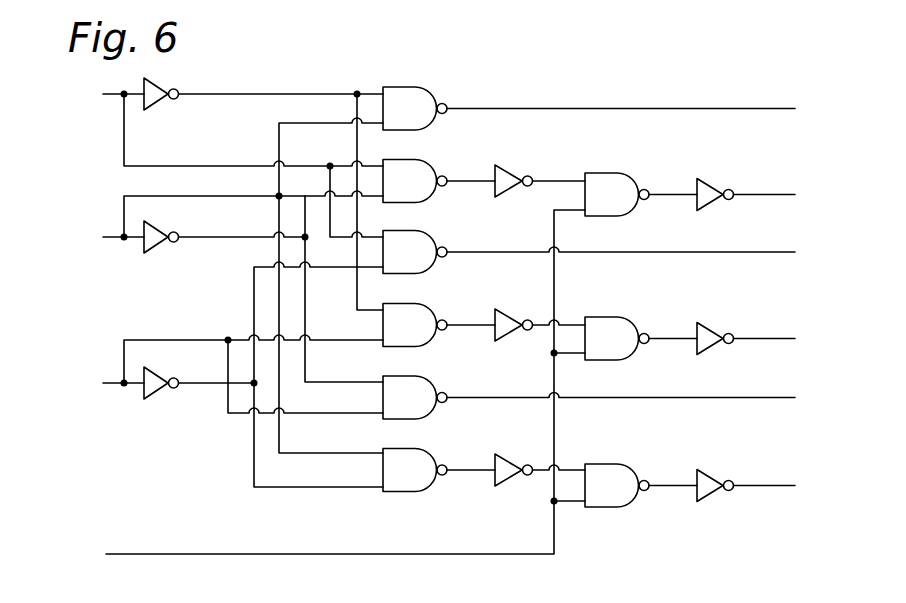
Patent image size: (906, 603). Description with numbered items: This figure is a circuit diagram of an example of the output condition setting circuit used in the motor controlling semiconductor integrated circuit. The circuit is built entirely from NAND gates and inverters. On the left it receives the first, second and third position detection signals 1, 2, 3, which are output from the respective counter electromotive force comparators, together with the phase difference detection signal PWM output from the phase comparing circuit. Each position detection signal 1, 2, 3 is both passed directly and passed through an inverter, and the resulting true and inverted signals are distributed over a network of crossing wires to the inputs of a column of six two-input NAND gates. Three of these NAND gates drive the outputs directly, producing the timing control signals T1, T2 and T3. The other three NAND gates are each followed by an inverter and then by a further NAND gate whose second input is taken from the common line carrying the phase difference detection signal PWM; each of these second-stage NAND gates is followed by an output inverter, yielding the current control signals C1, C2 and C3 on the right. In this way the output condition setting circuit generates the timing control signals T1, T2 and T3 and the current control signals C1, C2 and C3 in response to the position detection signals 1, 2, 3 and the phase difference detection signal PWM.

The first phase input P1 with inverter 1 is at (103, 94).
The second phase input P2 with inverter 2 is at (103, 237).
The third phase input P3 with inverter 3 is at (103, 383).
The phase difference detection signal PWM is at (106, 554).
The timing control signal T1 is at (637, 109).
The timing control signal T2 is at (637, 252).
The timing control signal T3 is at (637, 398).
The current control signal C1 is at (638, 190).
The current control signal C2 is at (638, 334).
The current control signal C3 is at (638, 480).